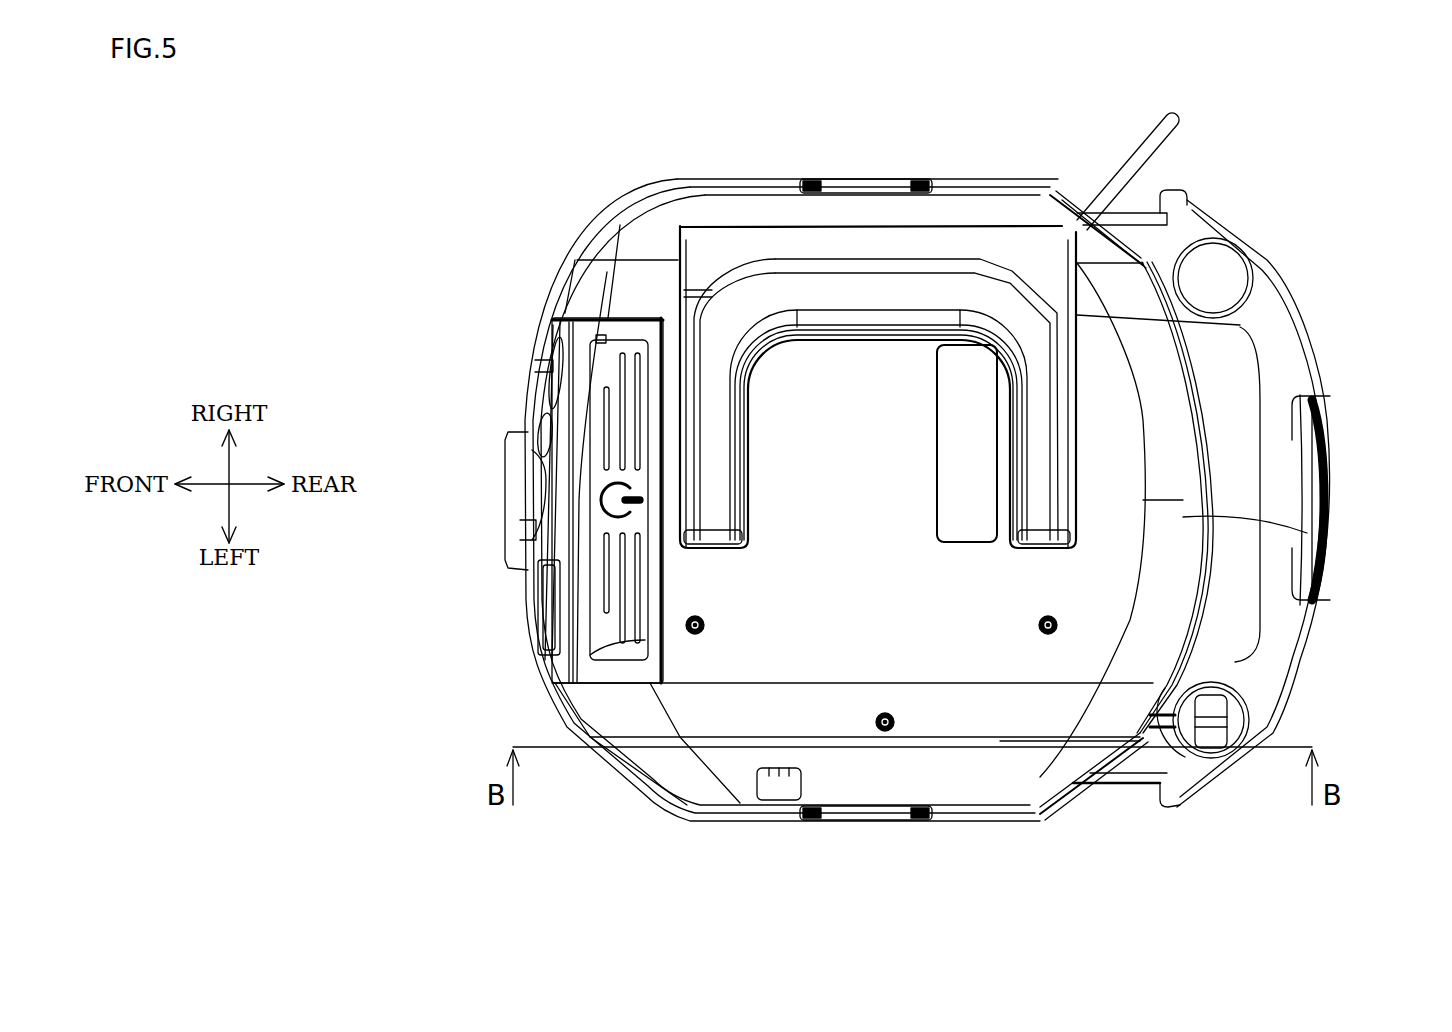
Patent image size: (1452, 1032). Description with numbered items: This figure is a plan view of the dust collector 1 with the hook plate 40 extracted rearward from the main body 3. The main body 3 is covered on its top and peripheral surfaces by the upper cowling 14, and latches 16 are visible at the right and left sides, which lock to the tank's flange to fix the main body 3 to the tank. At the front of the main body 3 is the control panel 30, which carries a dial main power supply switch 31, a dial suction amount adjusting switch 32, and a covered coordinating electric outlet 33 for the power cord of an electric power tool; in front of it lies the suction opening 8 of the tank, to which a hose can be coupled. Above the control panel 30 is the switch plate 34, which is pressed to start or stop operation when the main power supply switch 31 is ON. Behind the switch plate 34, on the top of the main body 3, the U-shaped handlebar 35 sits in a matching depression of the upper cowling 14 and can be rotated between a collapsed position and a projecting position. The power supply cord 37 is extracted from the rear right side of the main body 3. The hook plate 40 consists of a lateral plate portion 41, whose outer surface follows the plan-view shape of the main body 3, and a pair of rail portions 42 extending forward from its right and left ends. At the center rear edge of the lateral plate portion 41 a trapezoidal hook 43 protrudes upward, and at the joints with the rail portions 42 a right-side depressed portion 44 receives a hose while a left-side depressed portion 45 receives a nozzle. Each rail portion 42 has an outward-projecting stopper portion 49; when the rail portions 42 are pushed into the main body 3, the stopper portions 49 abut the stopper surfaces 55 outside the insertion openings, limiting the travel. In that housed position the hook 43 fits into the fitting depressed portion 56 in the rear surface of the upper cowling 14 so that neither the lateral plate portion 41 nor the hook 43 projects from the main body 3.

The dust collector 1 is at (1312, 128).
The main body 3 is at (1006, 176).
The suction opening 8 is at (622, 500).
The upper cowling 14 is at (677, 656).
The latches 16 is at (868, 178).
The control panel 30 is at (520, 540).
The main power supply switch 31 is at (530, 460).
The suction amount adjusting switch 32 is at (535, 367).
The electric outlet 33 is at (545, 605).
The switch plate 34 is at (550, 322).
The handlebar 35 is at (787, 290).
The power supply cord 37 is at (1133, 120).
The hook plate 40 is at (1303, 310).
The lateral plate portion 41 is at (1300, 360).
The rail portions 42 is at (1133, 232).
The hook 43 is at (1333, 495).
The right-side depressed portion 44 is at (1222, 258).
The left-side depressed portion 45 is at (1243, 720).
The stopper portion 49 is at (1180, 196).
The stopper surfaces 55 is at (1078, 200).
The fitting depressed portion 56 is at (1307, 533).